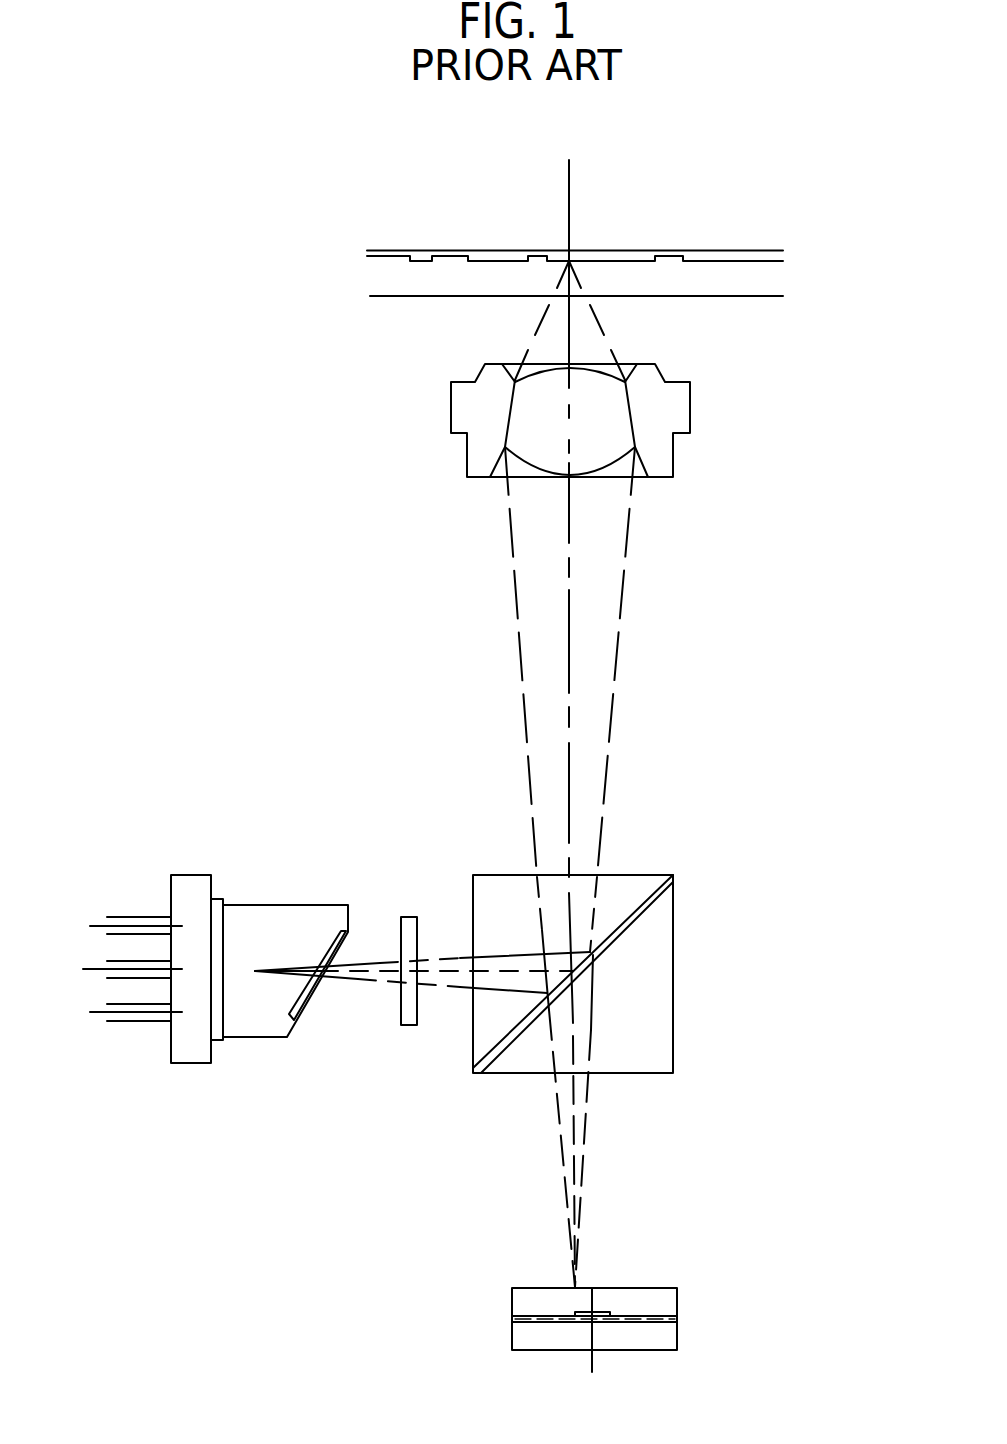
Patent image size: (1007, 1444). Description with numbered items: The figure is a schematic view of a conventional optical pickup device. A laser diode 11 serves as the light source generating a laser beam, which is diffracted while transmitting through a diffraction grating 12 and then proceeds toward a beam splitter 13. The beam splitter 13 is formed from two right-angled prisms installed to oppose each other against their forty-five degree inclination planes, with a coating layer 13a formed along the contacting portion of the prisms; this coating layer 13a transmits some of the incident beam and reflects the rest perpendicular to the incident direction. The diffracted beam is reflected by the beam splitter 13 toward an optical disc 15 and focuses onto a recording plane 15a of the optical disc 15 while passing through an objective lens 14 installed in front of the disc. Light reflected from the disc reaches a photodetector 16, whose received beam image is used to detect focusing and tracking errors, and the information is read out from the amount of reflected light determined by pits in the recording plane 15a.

The laser diode 11 is at (267, 917).
The diffraction grating 12 is at (412, 925).
The beam splitter 13 is at (675, 930).
The coating layer 13a is at (645, 895).
The objective lens 14 is at (462, 407).
The optical disc 15 is at (400, 275).
The recording plane 15a is at (449, 257).
The photodetector 16 is at (650, 1307).